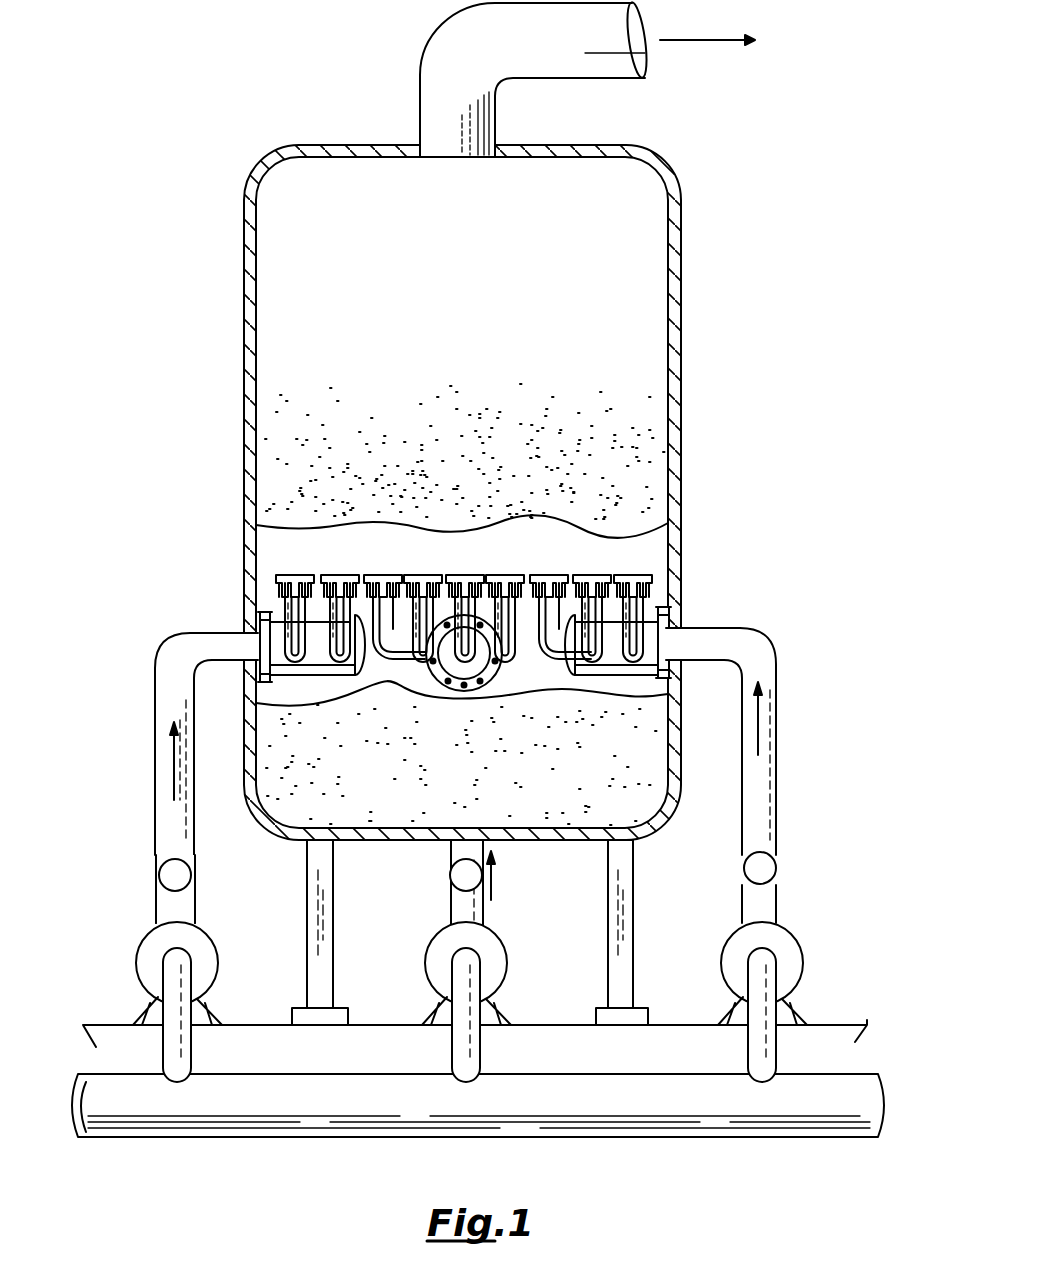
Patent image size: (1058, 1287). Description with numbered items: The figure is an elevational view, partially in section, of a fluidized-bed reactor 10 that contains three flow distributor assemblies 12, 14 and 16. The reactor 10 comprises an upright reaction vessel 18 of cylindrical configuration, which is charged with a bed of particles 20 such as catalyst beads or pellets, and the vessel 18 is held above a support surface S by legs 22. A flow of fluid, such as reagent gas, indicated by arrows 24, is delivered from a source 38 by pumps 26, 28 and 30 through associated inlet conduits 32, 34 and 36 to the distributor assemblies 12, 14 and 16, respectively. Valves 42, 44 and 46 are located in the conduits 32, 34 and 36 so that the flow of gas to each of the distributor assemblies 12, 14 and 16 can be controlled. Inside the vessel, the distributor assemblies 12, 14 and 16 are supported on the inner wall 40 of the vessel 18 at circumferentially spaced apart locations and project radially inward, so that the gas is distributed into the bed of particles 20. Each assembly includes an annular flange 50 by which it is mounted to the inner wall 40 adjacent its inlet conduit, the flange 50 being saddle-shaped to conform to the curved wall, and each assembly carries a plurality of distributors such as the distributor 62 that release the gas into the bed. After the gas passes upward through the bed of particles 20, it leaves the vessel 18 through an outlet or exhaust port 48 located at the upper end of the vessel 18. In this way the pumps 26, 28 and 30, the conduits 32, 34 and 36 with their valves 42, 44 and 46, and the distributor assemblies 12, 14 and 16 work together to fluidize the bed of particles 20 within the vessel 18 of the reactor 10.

The fluidized-bed reactor 10 is at (735, 153).
The flow distributor assembly 12 is at (315, 599).
The flow distributor assembly 14 is at (467, 569).
The flow distributor assembly 16 is at (598, 561).
The reaction vessel 18 is at (397, 144).
The bed of particles 20 is at (650, 460).
The legs 22 is at (307, 884).
The flow of fluid 24 is at (172, 758).
The pump 26 is at (136, 965).
The pump 28 is at (425, 966).
The pump 30 is at (721, 963).
The inlet conduit 32 is at (156, 915).
The inlet conduit 34 is at (451, 915).
The inlet conduit 36 is at (744, 910).
The source 38 is at (357, 1111).
The inner wall 40 is at (268, 690).
The valve 42 is at (160, 875).
The valve 44 is at (450, 880).
The valve 46 is at (745, 870).
The outlet or exhaust port 48 is at (564, 47).
The annular flange 50 is at (370, 663).
The distributor 62 is at (390, 567).
The support surface S is at (243, 1025).